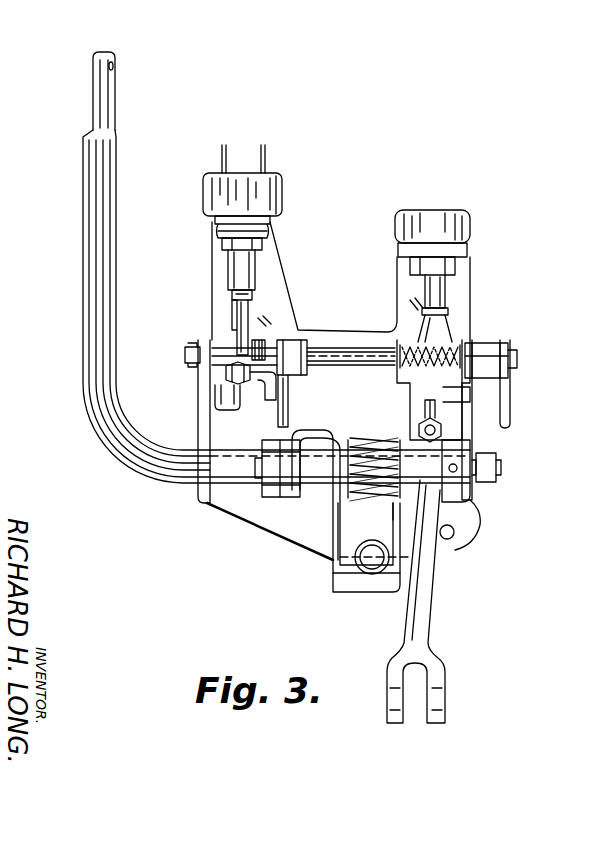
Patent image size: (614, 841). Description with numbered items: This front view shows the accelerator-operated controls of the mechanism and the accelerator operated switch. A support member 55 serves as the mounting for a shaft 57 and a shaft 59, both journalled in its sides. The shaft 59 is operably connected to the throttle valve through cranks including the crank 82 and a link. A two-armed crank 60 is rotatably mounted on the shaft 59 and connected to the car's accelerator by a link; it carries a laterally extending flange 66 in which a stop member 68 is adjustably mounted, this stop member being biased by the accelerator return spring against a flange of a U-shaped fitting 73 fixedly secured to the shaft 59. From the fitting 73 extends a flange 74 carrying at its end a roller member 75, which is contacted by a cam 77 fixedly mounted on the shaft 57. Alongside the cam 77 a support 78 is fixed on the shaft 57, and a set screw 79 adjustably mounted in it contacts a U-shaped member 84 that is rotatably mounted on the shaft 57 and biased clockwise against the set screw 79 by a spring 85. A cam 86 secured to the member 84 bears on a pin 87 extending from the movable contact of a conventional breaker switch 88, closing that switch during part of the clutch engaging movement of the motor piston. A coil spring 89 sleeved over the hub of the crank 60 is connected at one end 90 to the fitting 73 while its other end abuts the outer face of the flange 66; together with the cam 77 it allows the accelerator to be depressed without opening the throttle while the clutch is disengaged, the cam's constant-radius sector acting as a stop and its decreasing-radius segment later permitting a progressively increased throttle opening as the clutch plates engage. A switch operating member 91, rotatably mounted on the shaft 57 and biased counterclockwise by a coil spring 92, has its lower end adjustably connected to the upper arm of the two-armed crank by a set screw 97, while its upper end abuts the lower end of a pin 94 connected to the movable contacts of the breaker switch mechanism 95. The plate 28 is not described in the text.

The plate 28 is at (505, 398).
The support member 55 is at (232, 508).
The shaft 57 is at (335, 350).
The shaft 59 is at (238, 466).
The two-armed crank 60 is at (422, 605).
The laterally extending flange 66 is at (395, 585).
The stop member 68 is at (366, 570).
The U-shaped fitting 73 is at (320, 440).
The flange 74 is at (302, 482).
The roller member 75 is at (268, 494).
The cam 77 is at (288, 405).
The support 78 is at (270, 395).
The set screw 79 is at (236, 372).
The crank 82 is at (95, 187).
The U-shaped member 84 is at (226, 404).
The spring 85 is at (262, 340).
The cam 86 is at (240, 330).
The pin 87 is at (252, 292).
The breaker switch 88 is at (262, 185).
The coil spring 89 is at (365, 438).
The end of coil spring 90 is at (330, 548).
The switch operating member 91 is at (452, 335).
The coil spring 92 is at (460, 345).
The pin 94 is at (440, 312).
The breaker switch mechanism 95 is at (455, 232).
The set screw 97 is at (443, 432).